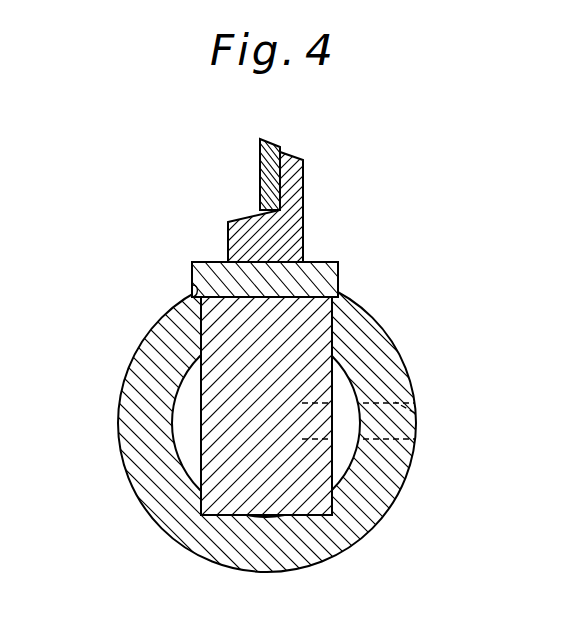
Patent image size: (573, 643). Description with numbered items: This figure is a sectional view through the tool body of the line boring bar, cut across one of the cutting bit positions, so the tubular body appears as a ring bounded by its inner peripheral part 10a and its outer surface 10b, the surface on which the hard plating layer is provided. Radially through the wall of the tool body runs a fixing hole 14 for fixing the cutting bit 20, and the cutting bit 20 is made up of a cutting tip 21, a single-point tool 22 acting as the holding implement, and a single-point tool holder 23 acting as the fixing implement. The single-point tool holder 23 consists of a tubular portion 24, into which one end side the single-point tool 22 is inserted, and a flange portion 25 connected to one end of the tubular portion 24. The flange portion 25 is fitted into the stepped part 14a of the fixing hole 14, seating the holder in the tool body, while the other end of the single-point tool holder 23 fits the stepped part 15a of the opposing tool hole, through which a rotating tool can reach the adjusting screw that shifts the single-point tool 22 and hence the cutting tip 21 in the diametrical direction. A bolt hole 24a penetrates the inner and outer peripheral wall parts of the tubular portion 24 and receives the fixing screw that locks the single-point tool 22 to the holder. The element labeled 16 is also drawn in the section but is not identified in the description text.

The cutting bit 20 is at (365, 317).
The cutting tip 21 is at (280, 147).
The single-point tool 22 is at (292, 201).
The single-point tool holder 23 is at (345, 376).
The tubular portion 24 is at (310, 335).
The bolt hole 24a is at (330, 422).
The flange portion 25 is at (323, 281).
The fixing hole 14 is at (213, 323).
The stepped part of the fixing hole 14a is at (190, 294).
The stepped part of the tool hole 15a is at (202, 504).
The hole 16 is at (415, 413).
The inner peripheral part of the tool body 10a is at (178, 436).
The surface of the tool body 10b is at (117, 413).